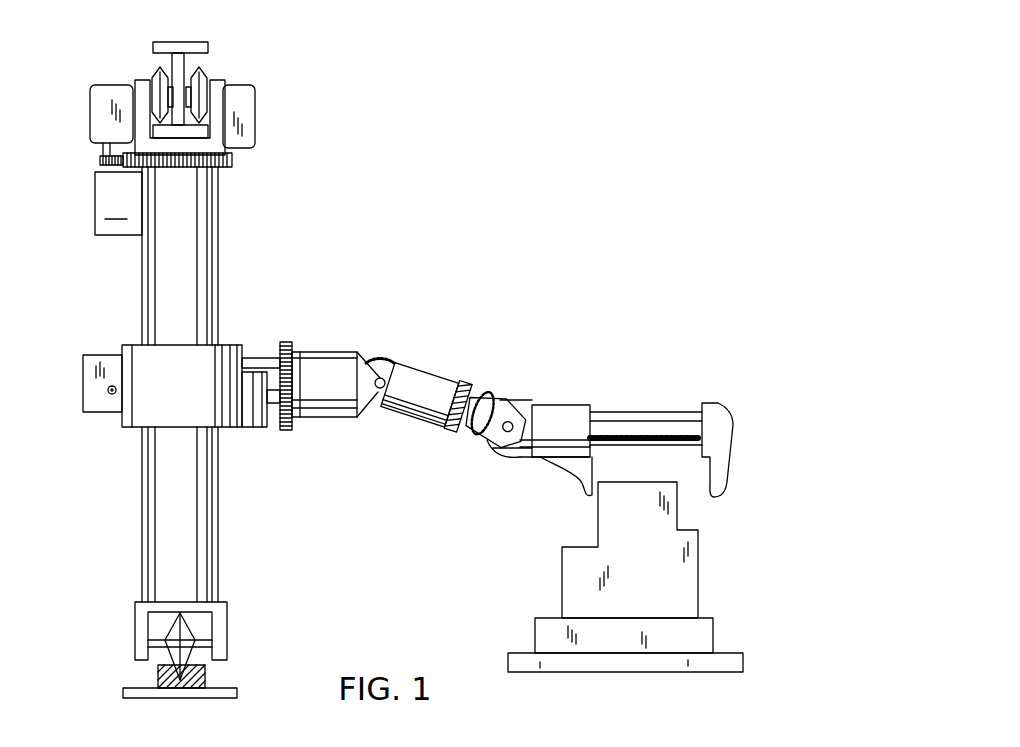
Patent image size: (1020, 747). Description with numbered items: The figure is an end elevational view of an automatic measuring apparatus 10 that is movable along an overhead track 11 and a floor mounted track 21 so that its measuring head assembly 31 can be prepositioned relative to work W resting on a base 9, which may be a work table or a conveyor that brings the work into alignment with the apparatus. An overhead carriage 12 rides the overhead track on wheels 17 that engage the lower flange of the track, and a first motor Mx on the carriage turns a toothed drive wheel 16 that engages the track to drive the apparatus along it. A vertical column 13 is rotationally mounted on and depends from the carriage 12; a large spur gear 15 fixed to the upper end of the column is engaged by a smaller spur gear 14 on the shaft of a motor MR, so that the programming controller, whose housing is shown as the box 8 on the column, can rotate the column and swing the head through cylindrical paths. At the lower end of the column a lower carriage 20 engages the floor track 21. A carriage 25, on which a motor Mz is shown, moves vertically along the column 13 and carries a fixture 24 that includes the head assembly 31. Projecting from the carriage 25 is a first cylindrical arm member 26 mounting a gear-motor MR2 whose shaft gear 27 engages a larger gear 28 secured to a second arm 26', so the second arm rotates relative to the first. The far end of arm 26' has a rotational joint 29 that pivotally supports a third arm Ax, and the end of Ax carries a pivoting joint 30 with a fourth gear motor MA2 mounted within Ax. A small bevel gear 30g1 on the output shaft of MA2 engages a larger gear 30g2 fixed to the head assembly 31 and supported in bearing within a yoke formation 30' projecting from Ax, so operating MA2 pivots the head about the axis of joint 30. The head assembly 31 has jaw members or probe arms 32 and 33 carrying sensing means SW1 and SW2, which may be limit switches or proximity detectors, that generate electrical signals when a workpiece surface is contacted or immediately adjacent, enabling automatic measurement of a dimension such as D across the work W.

The base 9 is at (745, 665).
The automatic measuring apparatus 10 is at (476, 204).
The overhead track 11 is at (207, 46).
The overhead carriage 12 is at (134, 86).
The vertical column 13 is at (215, 207).
The smaller spur gear 14 is at (100, 160).
The large spur gear 15 is at (233, 162).
The drive wheel 16 is at (207, 72).
The wheels 17 is at (156, 72).
The lower carriage 20 is at (228, 614).
The floor mounted track 21 is at (123, 692).
The fixture 24 is at (296, 466).
The carriage 25 is at (140, 420).
The first cylindrical arm member 26 is at (298, 353).
The second arm 26' is at (337, 430).
The gear 27 is at (303, 352).
The larger gear 28 is at (291, 342).
The rotational joint 29 is at (385, 372).
The pivoting joint 30 is at (507, 406).
The yoke formation 30' is at (509, 449).
The small bevel gear 30g1 is at (507, 395).
The larger gear 30g2 is at (490, 447).
The measuring head assembly 31 is at (716, 392).
The jaw member 32 is at (580, 476).
The jaw member 33 is at (722, 450).
The control box 8 is at (118, 203).
The motor MR is at (100, 104).
The first motor Mx is at (250, 110).
The z-axis motor Mz is at (92, 395).
The first gear-motor MR2 is at (267, 420).
The fourth gear motor MA2 is at (452, 437).
The third arm Ax is at (430, 378).
The sensing means SW1 is at (597, 500).
The sensing means SW2 is at (704, 495).
The dimension D is at (677, 363).
The work W is at (650, 582).